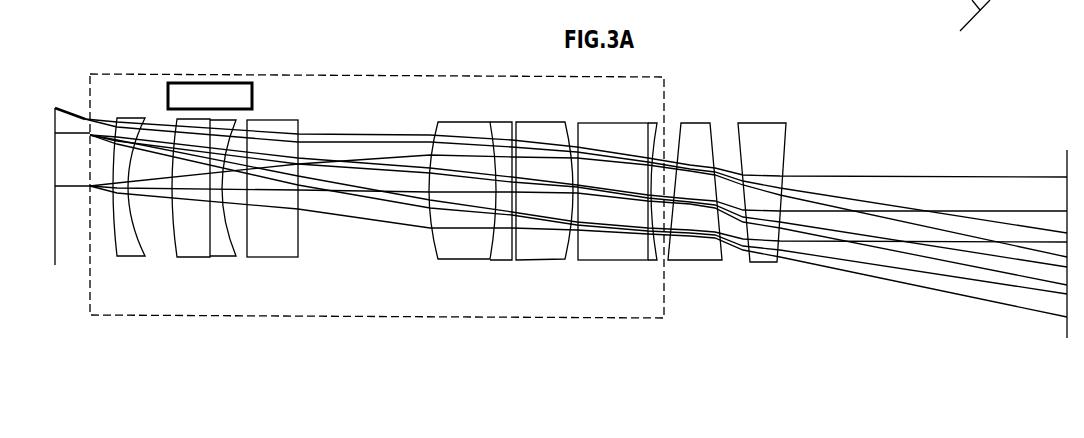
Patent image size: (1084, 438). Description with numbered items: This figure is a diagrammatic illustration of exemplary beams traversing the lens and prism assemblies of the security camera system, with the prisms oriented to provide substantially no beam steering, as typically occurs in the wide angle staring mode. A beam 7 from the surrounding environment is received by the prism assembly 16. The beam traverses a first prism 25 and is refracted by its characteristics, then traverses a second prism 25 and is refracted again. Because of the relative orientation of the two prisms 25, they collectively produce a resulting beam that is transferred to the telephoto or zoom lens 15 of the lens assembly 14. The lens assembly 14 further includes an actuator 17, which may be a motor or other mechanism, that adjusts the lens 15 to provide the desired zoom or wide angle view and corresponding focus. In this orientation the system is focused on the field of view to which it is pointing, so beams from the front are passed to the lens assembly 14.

The beam 7 is at (73, 199).
The lens assembly 14 is at (388, 75).
The telephoto or zoom lens 15 is at (353, 269).
The prism assembly 16 is at (748, 113).
The actuator 17 is at (231, 83).
The prism 25 is at (739, 202).